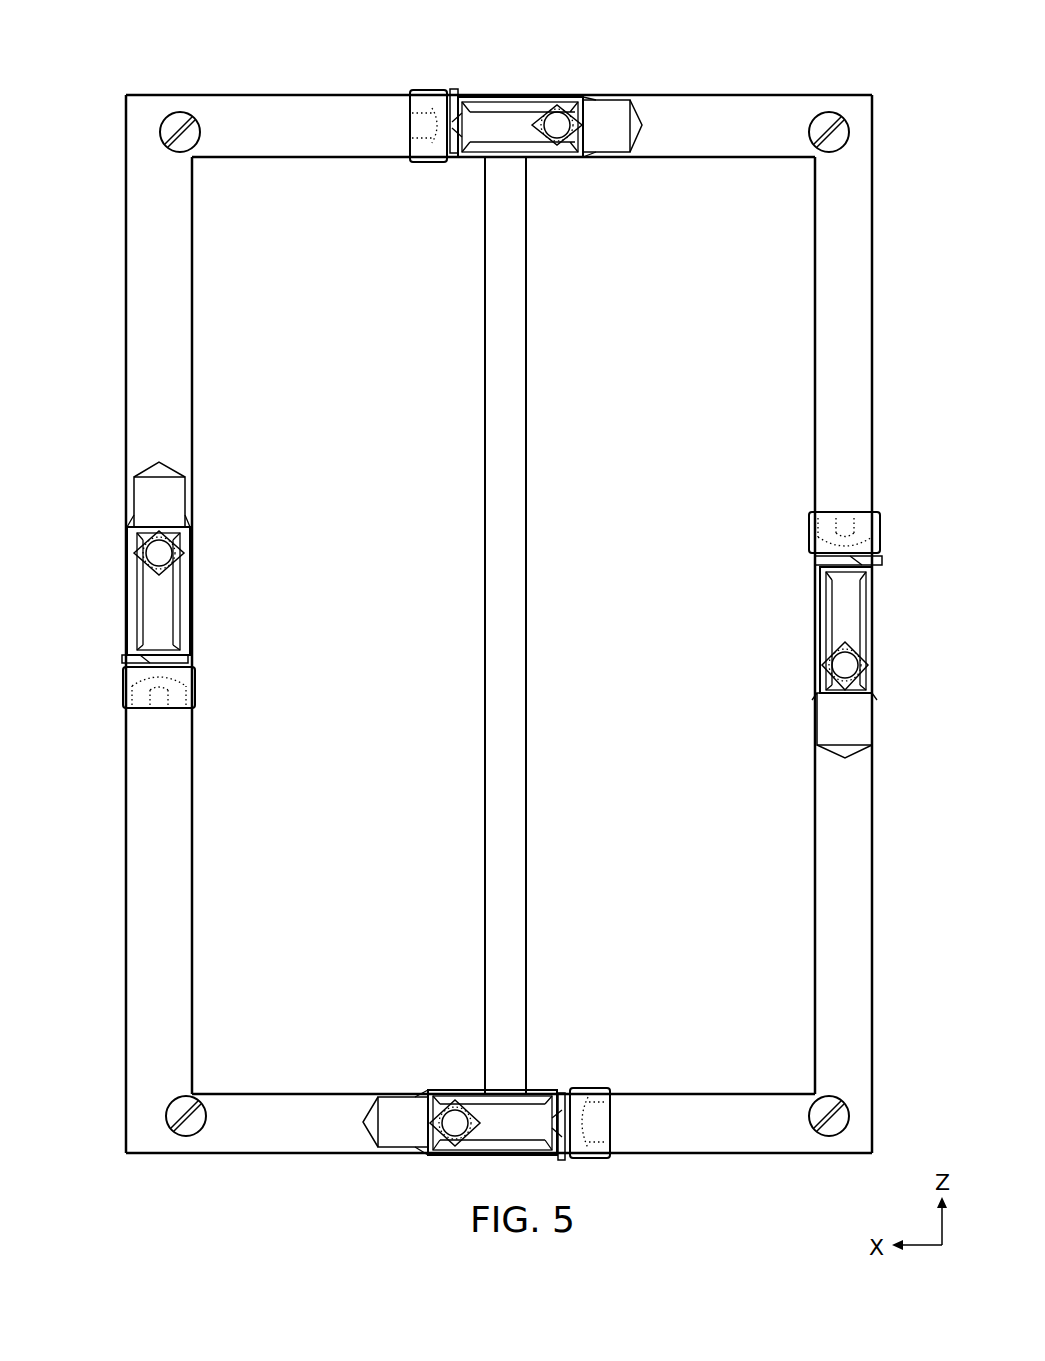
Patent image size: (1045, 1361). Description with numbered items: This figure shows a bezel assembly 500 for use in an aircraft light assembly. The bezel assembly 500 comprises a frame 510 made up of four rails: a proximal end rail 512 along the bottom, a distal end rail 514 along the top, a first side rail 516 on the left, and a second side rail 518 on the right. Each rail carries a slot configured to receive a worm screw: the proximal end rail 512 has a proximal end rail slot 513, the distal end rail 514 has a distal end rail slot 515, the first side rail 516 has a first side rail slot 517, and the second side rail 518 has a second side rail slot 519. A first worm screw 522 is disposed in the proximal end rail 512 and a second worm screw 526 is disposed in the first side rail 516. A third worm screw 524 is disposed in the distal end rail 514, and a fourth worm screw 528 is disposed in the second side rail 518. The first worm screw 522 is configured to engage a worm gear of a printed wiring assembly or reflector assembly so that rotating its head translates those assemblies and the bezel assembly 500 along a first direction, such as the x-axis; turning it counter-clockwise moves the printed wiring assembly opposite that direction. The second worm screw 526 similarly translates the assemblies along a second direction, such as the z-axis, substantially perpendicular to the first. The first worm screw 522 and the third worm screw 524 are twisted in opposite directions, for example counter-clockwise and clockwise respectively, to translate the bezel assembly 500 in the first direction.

The bezel assembly 500 is at (89, 132).
The frame 510 is at (154, 334).
The proximal end rail 512 is at (273, 1130).
The proximal end rail slot 513 is at (518, 1123).
The distal end rail 514 is at (357, 135).
The distal end rail slot 515 is at (503, 125).
The first side rail 516 is at (177, 937).
The first side rail slot 517 is at (153, 612).
The second side rail 518 is at (840, 330).
The second side rail slot 519 is at (845, 600).
The first worm screw 522 is at (448, 1116).
The third worm screw 524 is at (430, 130).
The second worm screw 526 is at (168, 702).
The fourth worm screw 528 is at (828, 535).